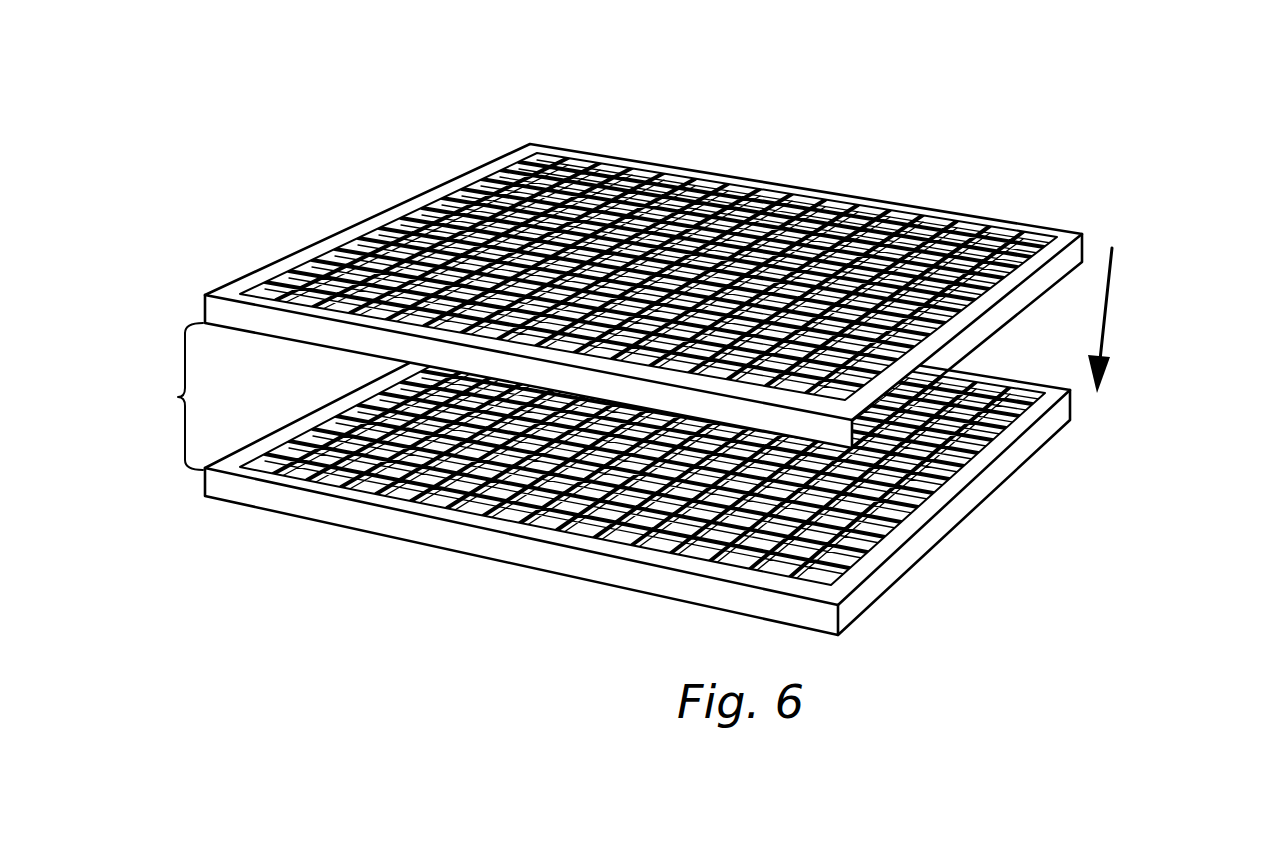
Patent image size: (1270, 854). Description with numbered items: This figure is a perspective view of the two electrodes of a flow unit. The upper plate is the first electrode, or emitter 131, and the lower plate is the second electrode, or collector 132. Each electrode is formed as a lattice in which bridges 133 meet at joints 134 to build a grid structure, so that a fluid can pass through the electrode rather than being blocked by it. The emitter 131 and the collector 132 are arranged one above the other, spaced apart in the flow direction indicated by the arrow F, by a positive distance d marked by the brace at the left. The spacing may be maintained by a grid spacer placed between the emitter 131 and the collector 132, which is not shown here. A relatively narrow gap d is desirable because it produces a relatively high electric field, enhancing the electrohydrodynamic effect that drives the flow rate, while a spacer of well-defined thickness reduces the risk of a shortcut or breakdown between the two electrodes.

The emitter 131 is at (340, 172).
The collector 132 is at (948, 572).
The bridges 133 is at (827, 205).
The joints 134 is at (878, 205).
The flow direction arrow F is at (1108, 283).
The distance d is at (181, 396).